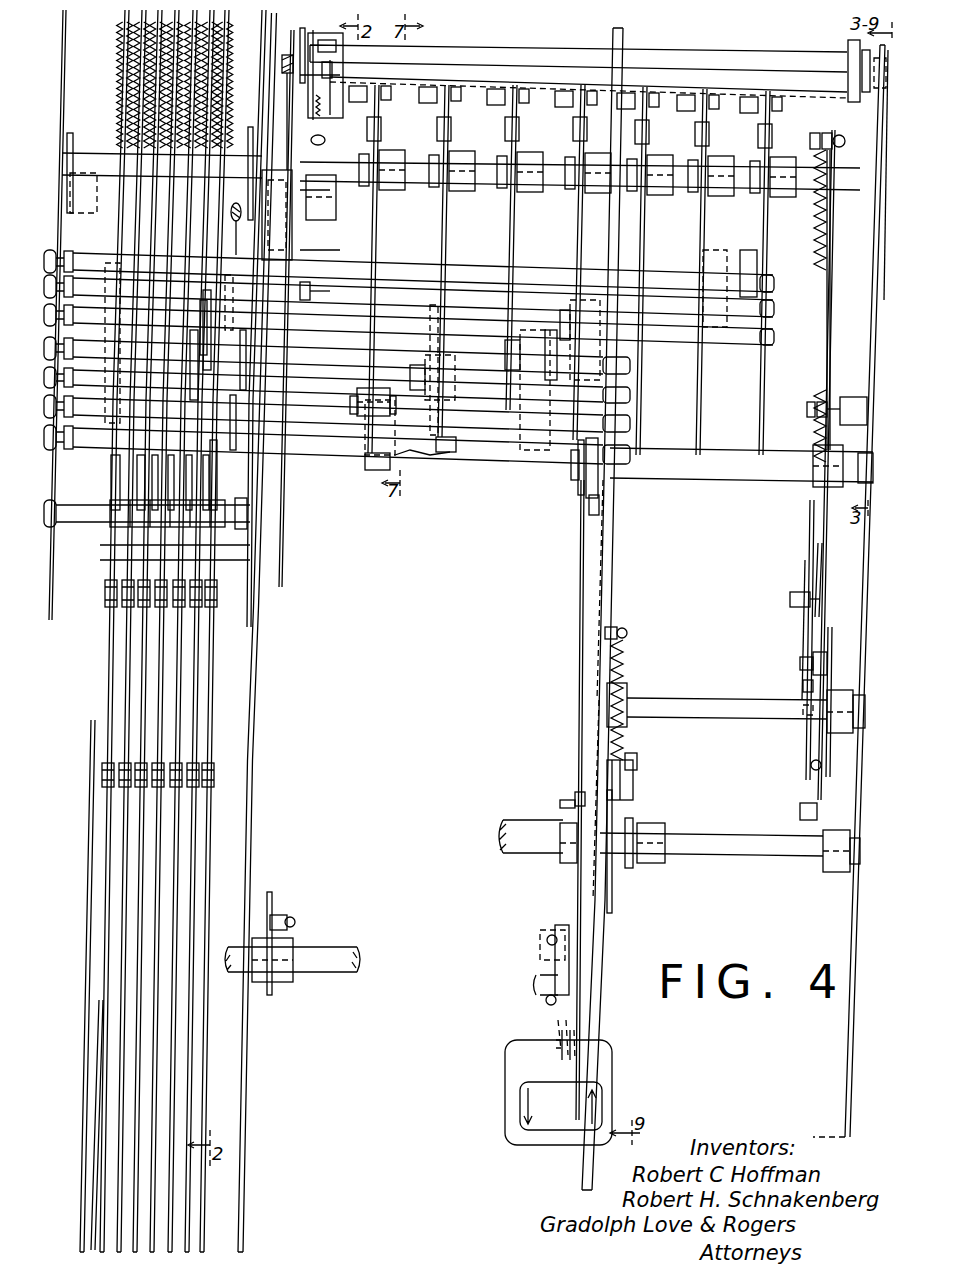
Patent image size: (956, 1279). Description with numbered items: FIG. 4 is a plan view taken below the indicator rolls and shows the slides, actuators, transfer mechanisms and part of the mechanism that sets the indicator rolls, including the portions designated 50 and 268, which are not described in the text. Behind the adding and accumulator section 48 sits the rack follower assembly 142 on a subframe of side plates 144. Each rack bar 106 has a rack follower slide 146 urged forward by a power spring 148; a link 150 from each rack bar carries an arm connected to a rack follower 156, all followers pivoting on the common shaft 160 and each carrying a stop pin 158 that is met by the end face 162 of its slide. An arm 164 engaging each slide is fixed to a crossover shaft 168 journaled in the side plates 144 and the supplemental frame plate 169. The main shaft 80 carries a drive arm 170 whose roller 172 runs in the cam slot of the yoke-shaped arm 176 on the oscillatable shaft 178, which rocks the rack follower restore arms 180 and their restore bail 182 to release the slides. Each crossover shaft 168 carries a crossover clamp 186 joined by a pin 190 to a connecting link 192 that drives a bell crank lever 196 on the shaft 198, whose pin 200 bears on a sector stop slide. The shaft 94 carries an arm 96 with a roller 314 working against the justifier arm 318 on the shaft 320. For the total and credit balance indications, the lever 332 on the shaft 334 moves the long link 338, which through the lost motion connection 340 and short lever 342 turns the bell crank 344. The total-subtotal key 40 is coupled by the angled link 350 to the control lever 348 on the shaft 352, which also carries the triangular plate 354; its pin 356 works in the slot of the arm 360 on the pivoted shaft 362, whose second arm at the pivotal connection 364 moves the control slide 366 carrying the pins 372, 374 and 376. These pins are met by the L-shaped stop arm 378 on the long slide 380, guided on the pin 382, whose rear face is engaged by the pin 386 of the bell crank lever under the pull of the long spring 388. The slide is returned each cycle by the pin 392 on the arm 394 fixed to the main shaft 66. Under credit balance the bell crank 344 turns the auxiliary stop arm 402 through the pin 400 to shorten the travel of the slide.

The total-subtotal control key 40 is at (563, 1118).
The adding and accumulator section 48 is at (258, 1042).
The carriage 50 is at (511, 466).
The main shaft 66 is at (526, 820).
The main shaft 80 is at (236, 216).
The shaft 94 is at (560, 58).
The arm 96 is at (336, 77).
The rack bars 106 is at (110, 901).
The rack follower assembly 142 is at (111, 411).
The side plates 144 is at (250, 603).
The rack follower slide 146 is at (200, 334).
The power springs 148 is at (125, 51).
The link 150 is at (155, 673).
The rack follower 156 is at (130, 534).
The stop pin 158 is at (115, 468).
The common shaft 160 is at (108, 503).
The end faces 162 is at (175, 458).
The arm 164 is at (150, 323).
The crossover shafts 168 is at (345, 455).
The supplemental frame plate 169 is at (626, 379).
The drive arm 170 is at (303, 246).
The roller 172 is at (322, 106).
The yoke-shaped arm 176 is at (320, 139).
The oscillatable shaft 178 is at (308, 183).
The rack follower restore arms 180 is at (250, 128).
The restore bail 182 is at (123, 148).
The crossover clamp 186 is at (455, 446).
The pin 190 is at (350, 399).
The connecting link 192 is at (580, 243).
The bell crank lever 196 is at (832, 126).
The shaft 198 is at (412, 173).
The pin 200 is at (582, 101).
The pin 268 is at (300, 283).
The roller 314 is at (333, 63).
The justifier arm 318 is at (847, 48).
The shaft 320 is at (282, 58).
The lever 332 is at (550, 1018).
The shaft 334 is at (330, 953).
The long link 338 is at (578, 668).
The pivotal lost motion connection 340 is at (576, 463).
The short lever 342 is at (586, 481).
The bell crank 344 is at (813, 519).
The control lever 348 is at (577, 795).
The angled link 350 is at (558, 983).
The shaft 352 is at (560, 856).
The triangular plate 354 is at (612, 903).
The pin 356 is at (638, 758).
The arm 360 is at (623, 678).
The pivoted shaft 362 is at (690, 705).
The pivotal connection 364 is at (813, 760).
The control slide 366 is at (832, 638).
The pin 372 is at (800, 655).
The pin 374 is at (802, 681).
The pin 376 is at (807, 695).
The L-shaped stop arm 378 is at (822, 596).
The long slide 380 is at (828, 281).
The pin 382 is at (845, 396).
The pin 386 is at (833, 135).
The long spring 388 is at (818, 317).
The pin 392 is at (800, 799).
The arm 394 is at (822, 828).
The pin 400 is at (790, 593).
The auxiliary stop arm 402 is at (805, 615).